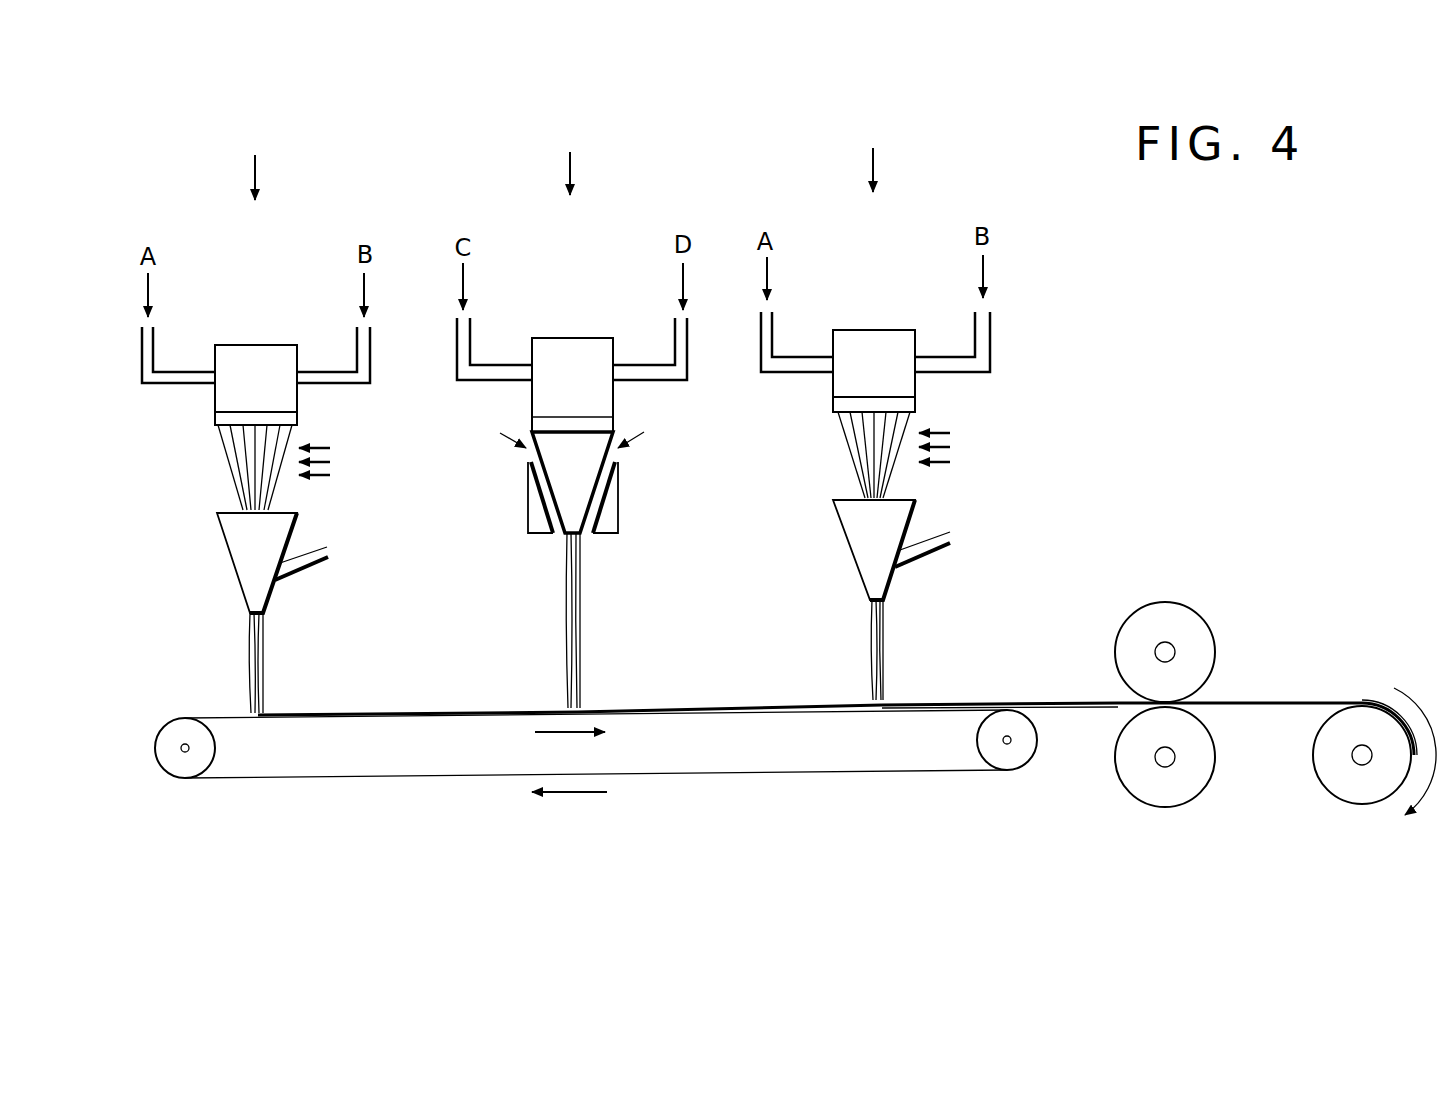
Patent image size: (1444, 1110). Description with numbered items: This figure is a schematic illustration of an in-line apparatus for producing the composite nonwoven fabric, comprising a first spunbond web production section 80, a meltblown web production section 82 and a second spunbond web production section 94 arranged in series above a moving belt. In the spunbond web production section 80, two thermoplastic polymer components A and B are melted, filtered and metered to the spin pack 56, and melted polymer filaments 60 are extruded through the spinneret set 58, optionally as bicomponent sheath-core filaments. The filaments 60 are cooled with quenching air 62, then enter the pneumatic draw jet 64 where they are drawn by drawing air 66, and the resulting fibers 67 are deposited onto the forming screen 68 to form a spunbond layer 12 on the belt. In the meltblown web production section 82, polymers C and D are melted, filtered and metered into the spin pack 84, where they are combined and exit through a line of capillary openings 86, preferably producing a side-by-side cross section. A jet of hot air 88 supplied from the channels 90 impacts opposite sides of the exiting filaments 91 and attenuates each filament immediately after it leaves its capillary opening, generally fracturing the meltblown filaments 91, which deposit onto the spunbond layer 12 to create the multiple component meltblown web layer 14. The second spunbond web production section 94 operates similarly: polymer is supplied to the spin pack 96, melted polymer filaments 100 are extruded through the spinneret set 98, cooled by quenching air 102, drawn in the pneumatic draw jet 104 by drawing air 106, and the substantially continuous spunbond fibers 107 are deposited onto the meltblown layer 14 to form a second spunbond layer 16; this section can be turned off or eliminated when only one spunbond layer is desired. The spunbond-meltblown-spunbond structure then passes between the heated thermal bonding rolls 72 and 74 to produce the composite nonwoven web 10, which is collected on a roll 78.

The composite nonwoven web 10 is at (1312, 701).
The spunbond layer 12 is at (345, 714).
The meltblown web layer 14 is at (645, 709).
The second spunbond layer 16 is at (965, 701).
The spin pack 56 is at (253, 344).
The spinneret set 58 is at (213, 422).
The melted polymer filaments 60 is at (225, 455).
The quenching air 62 is at (335, 460).
The pneumatic draw jet 64 is at (217, 526).
The drawing air 66 is at (333, 546).
The fibers 67 is at (263, 650).
The forming screen 68 is at (191, 716).
The thermal bonding roll 72 is at (1128, 612).
The thermal bonding roll 74 is at (1125, 785).
The roll 78 is at (1316, 775).
The spunbond web production section 80 is at (255, 159).
The meltblown web production section 82 is at (570, 155).
The spin pack 84 is at (568, 337).
The capillary openings 86 is at (558, 447).
The jet of hot air 88 is at (572, 433).
The channels 90 is at (548, 510).
The meltblown filaments 91 is at (583, 645).
The second spunbond web production section 94 is at (873, 151).
The spin pack 96 is at (873, 330).
The spinneret set 98 is at (832, 407).
The melted polymer filaments 100 is at (845, 440).
The quenching air 102 is at (955, 447).
The pneumatic draw jet 104 is at (835, 515).
The drawing air 106 is at (953, 533).
The spunbond fibers 107 is at (883, 635).